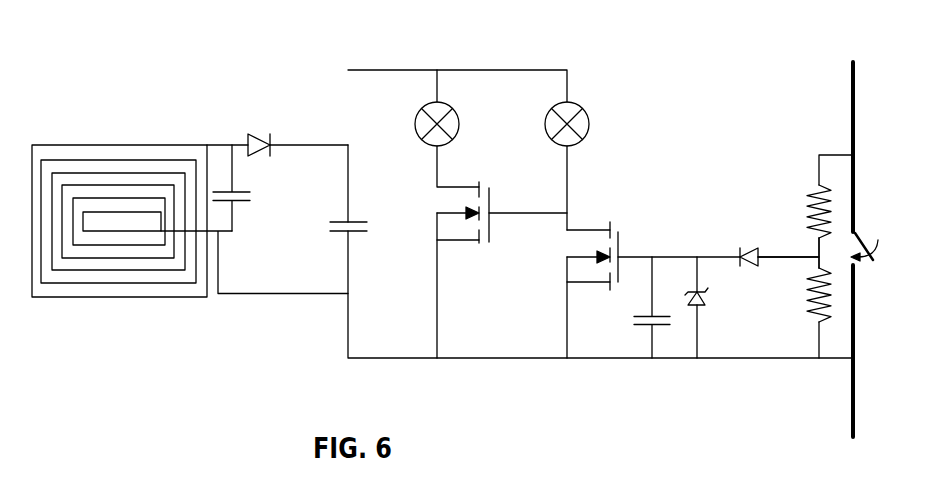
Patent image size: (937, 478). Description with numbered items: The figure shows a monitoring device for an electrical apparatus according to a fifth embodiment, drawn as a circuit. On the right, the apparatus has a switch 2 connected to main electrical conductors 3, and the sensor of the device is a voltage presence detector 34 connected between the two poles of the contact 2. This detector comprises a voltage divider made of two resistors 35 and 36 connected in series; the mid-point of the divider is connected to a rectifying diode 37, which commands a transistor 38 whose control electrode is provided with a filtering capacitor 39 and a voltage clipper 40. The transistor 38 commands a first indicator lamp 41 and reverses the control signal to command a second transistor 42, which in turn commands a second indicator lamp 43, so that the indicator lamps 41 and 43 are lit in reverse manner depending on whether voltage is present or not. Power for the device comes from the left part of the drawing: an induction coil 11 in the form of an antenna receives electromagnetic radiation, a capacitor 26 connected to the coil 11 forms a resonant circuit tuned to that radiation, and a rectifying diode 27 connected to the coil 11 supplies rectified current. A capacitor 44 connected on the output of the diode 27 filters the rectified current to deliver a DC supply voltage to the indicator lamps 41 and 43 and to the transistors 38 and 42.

The switch 2 is at (866, 224).
The main electrical conductors 3 is at (857, 416).
The induction coil 11 is at (72, 167).
The capacitor 26 is at (238, 193).
The rectifying diode 27 is at (250, 134).
The voltage presence detector 34 is at (779, 213).
The resistor 35 is at (808, 190).
The resistor 36 is at (806, 307).
The rectifying diode 37 is at (752, 248).
The transistor 38 is at (610, 223).
The filtering capacitor 39 is at (645, 327).
The voltage clipper 40 is at (703, 305).
The first indicator lamp 41 is at (548, 108).
The second transistor 42 is at (487, 182).
The second indicator lamp 43 is at (418, 128).
The capacitor 44 is at (345, 230).